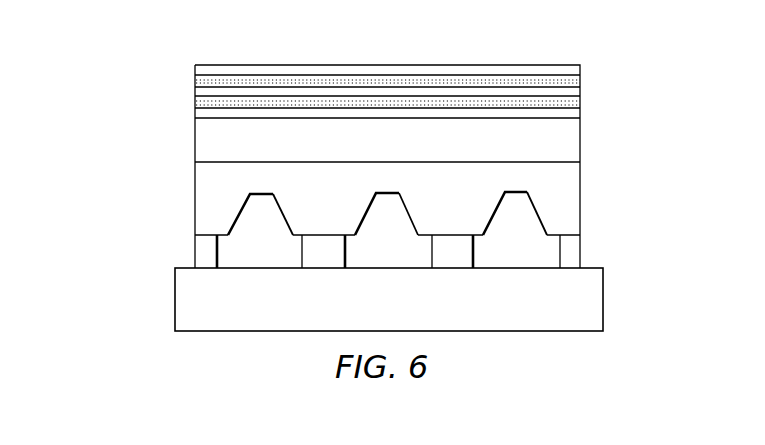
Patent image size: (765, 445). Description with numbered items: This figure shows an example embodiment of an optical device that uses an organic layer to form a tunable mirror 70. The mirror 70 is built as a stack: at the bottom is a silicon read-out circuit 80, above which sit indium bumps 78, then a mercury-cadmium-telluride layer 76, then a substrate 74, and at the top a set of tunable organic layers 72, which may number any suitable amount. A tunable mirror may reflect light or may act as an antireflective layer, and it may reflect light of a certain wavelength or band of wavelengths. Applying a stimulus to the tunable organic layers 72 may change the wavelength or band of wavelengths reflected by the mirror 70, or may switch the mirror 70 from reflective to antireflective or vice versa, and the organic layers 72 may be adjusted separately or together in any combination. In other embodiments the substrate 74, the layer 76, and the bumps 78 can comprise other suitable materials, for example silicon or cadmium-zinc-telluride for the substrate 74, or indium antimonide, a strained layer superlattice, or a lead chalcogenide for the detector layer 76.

The mirror 70 is at (630, 79).
The tunable organic layers 72 is at (182, 65).
The substrate 74 is at (570, 138).
The mercury-cadmium-telluride layer 76 is at (570, 192).
The indium bumps 78 is at (202, 255).
The silicon read-out circuit 80 is at (400, 311).